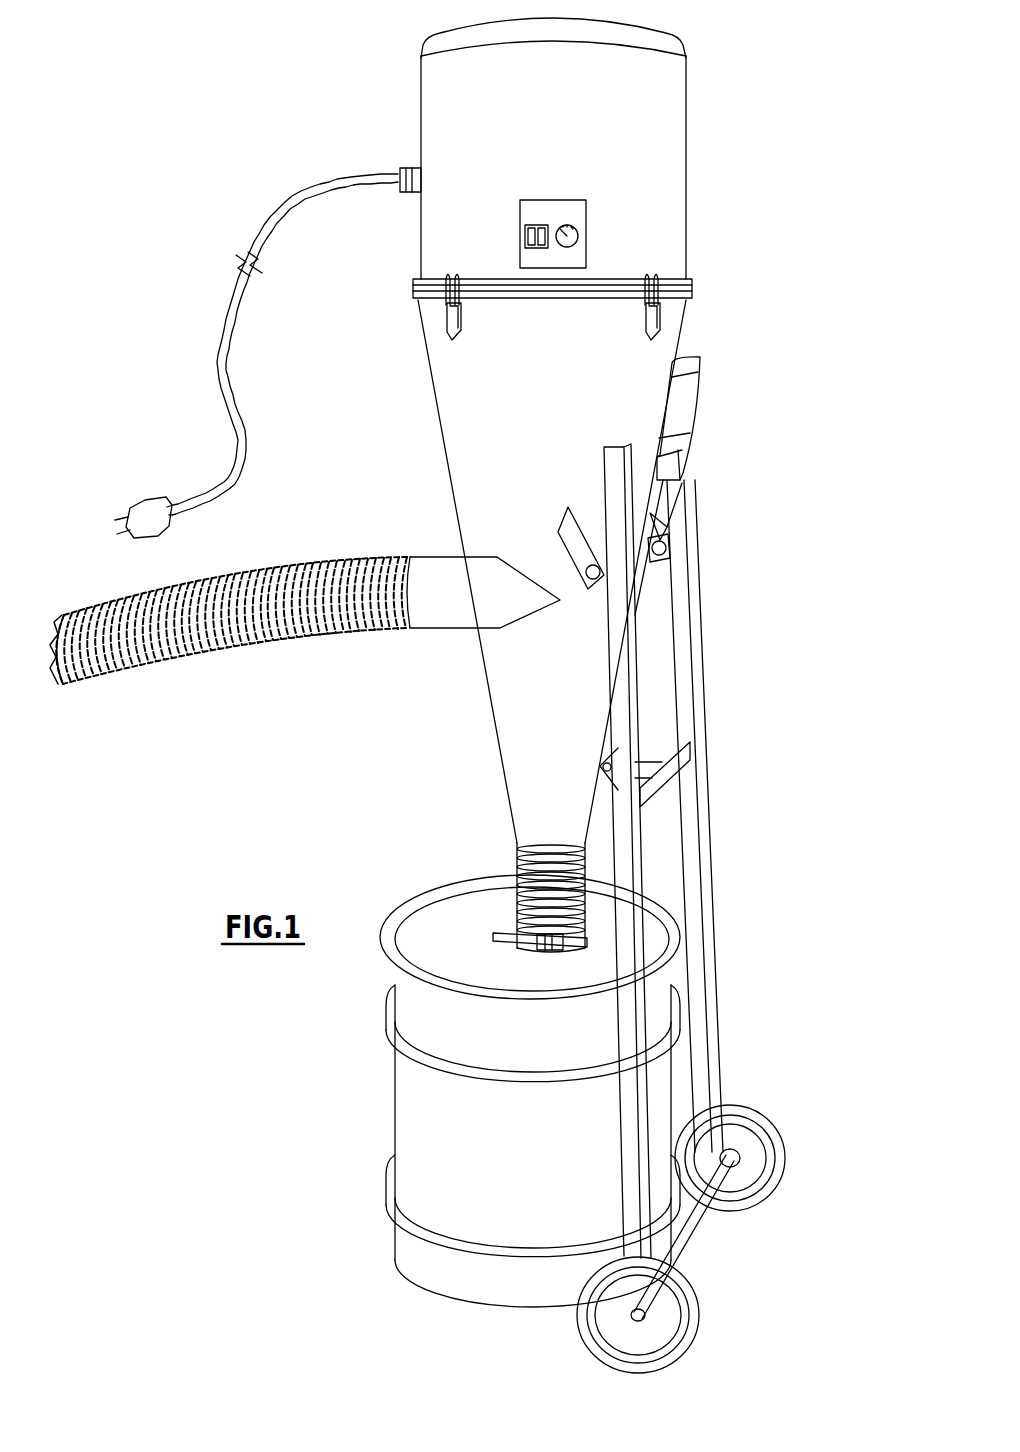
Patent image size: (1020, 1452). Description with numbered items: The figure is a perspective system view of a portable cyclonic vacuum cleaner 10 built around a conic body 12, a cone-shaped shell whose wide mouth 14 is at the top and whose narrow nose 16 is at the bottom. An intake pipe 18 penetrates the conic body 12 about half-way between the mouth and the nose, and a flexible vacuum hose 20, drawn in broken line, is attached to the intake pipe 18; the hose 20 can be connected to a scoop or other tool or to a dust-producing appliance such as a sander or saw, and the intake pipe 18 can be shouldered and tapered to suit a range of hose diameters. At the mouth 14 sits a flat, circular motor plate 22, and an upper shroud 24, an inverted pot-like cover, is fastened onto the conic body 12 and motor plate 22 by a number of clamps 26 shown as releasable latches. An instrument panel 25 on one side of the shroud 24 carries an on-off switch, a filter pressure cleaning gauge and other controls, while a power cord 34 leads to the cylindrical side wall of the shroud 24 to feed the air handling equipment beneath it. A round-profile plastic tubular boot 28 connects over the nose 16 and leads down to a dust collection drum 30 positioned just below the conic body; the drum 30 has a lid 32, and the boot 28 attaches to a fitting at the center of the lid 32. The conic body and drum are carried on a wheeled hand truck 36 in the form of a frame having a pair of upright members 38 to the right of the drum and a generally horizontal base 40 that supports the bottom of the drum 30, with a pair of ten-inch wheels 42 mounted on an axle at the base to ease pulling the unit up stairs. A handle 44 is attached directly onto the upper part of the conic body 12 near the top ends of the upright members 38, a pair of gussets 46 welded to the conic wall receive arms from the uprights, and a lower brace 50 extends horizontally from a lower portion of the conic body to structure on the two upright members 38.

The cyclonic vacuum cleaner 10 is at (738, 375).
The conic body 12 is at (420, 443).
The mouth 14 is at (702, 300).
The nose 16 is at (505, 852).
The intake pipe 18 is at (475, 604).
The flexible vacuum hose 20 is at (190, 650).
The motor plate 22 is at (694, 291).
The upper shroud 24 is at (688, 115).
The instrument panel 25 is at (585, 212).
The clamps 26 is at (459, 335).
The tubular boot 28 is at (520, 897).
The dust collection drum 30 is at (405, 1132).
The lid 32 is at (412, 940).
The power cord 34 is at (279, 207).
The hand truck 36 is at (725, 897).
The upright members 38 is at (704, 625).
The base 40 is at (680, 1221).
The wheels 42 is at (766, 1118).
The handle 44 is at (700, 408).
The gussets 46 is at (572, 525).
The lower brace 50 is at (670, 745).